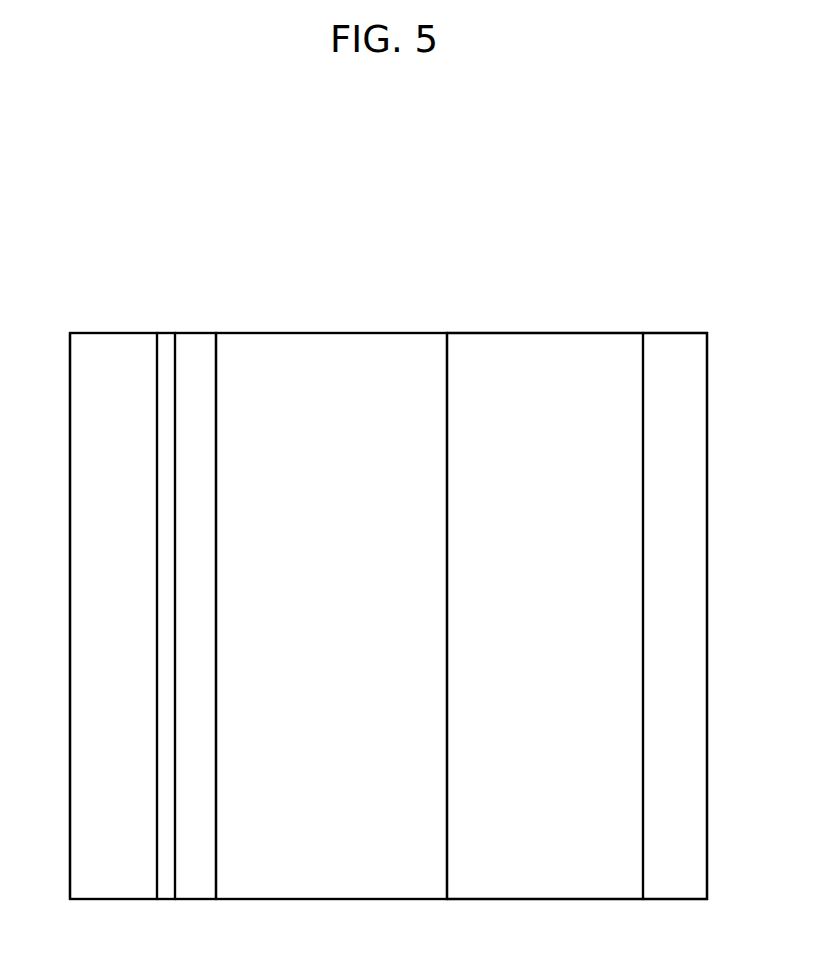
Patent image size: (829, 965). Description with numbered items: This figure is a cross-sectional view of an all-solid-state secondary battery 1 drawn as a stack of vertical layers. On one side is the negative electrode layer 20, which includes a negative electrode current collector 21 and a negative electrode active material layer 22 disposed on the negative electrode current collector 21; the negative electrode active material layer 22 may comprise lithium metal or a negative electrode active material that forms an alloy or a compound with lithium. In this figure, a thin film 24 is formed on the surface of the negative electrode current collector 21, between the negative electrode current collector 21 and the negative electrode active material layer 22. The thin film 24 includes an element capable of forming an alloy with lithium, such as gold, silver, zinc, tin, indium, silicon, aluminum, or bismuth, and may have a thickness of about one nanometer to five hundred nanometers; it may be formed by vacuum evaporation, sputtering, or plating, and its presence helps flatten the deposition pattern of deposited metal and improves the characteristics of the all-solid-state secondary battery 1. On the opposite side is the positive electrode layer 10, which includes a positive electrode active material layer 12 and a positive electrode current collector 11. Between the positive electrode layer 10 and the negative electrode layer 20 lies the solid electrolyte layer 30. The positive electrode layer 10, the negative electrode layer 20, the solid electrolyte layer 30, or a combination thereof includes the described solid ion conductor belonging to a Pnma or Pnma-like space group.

The all-solid-state secondary battery 1 is at (702, 227).
The positive electrode layer 10 is at (533, 275).
The positive electrode current collector 11 is at (675, 348).
The positive electrode active material layer 12 is at (544, 348).
The negative electrode layer 20 is at (207, 275).
The negative electrode current collector 21 is at (114, 347).
The negative electrode active material layer 22 is at (196, 347).
The thin film 24 is at (167, 347).
The solid electrolyte layer 30 is at (328, 348).